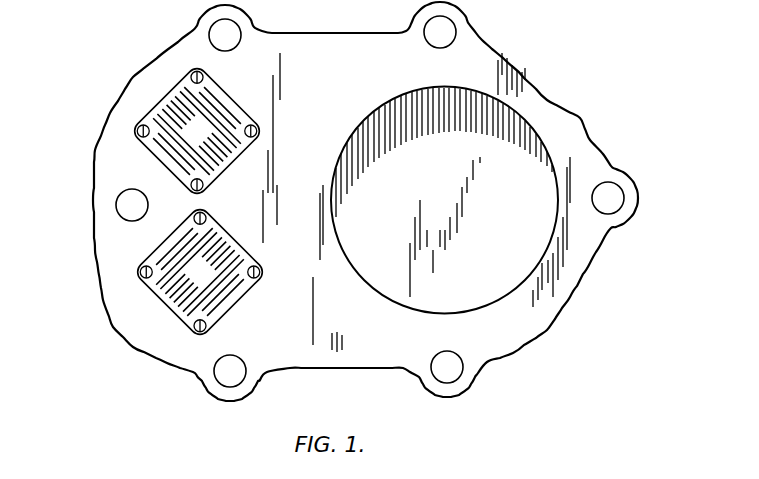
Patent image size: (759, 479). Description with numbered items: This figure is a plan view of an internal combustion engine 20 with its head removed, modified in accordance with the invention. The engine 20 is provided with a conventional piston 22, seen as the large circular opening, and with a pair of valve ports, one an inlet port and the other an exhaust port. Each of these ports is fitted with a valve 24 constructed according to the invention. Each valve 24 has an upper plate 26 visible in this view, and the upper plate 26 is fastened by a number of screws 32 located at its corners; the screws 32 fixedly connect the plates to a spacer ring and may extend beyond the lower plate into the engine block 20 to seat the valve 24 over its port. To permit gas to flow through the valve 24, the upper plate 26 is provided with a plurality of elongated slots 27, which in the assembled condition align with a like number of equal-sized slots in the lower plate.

The internal combustion engine 20 is at (541, 26).
The piston 22 is at (482, 224).
The valve 24 is at (126, 103).
The upper plate 26 is at (222, 92).
The elongated slots 27 is at (204, 243).
The screws 32 is at (141, 140).